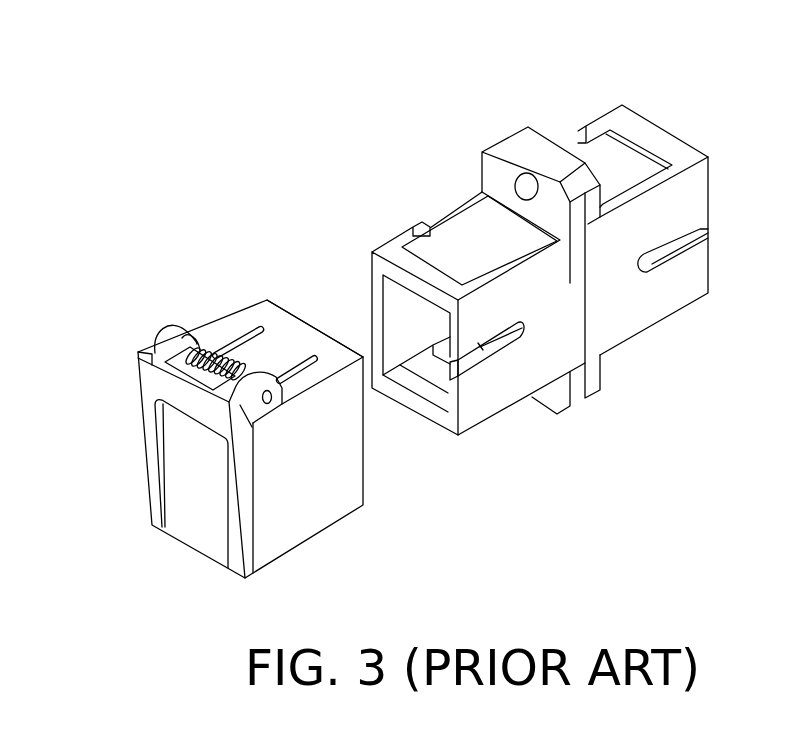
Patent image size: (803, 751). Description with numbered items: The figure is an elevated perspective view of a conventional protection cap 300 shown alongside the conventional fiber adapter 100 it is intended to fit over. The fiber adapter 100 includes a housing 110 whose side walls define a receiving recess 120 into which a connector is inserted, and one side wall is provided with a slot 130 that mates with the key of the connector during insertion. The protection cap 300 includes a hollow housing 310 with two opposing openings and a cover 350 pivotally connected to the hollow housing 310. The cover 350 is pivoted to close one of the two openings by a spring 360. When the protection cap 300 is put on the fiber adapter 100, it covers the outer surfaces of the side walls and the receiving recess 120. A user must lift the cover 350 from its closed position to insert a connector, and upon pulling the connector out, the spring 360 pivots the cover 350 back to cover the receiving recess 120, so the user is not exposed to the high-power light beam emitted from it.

The fiber adapter 100 is at (531, 275).
The housing 110 is at (474, 331).
The receiving recess 120 is at (432, 368).
The slot 130 is at (477, 353).
The protection cap 300 is at (204, 367).
The hollow housing 310 is at (253, 320).
The cover 350 is at (188, 496).
The spring 360 is at (212, 355).